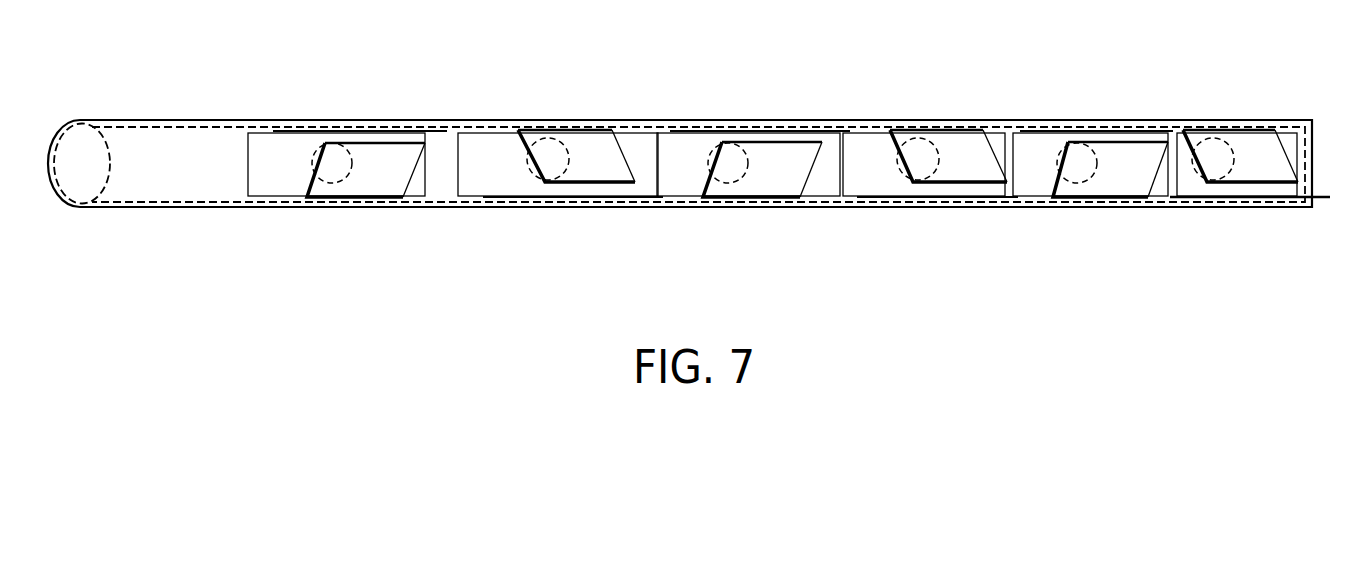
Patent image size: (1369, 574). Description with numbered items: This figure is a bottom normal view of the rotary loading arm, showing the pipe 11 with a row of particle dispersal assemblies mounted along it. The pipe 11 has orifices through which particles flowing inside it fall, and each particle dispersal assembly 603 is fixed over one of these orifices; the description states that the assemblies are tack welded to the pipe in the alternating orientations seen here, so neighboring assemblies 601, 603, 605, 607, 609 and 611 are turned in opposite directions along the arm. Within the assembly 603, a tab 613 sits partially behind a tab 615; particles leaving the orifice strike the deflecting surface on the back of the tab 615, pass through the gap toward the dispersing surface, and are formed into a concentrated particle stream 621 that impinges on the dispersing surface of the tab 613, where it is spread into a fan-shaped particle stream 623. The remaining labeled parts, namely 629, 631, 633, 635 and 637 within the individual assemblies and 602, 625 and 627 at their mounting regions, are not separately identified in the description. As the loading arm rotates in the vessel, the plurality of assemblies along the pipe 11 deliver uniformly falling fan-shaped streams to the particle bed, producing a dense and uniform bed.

The pipe 11 is at (197, 207).
The first unit 601 is at (347, 157).
The particle dispersal assembly 603 is at (560, 158).
The third unit 605 is at (753, 157).
The fourth unit 607 is at (930, 160).
The fifth unit 609 is at (1100, 160).
The sixth unit 611 is at (1265, 155).
The mirror plate 629 is at (373, 173).
The tab 615 is at (585, 160).
The mirror plate 631 is at (768, 172).
The mirror plate 633 is at (963, 168).
The mirror plate 635 is at (1127, 170).
The mirror plate 637 is at (1262, 153).
The support rail 602 is at (438, 132).
The tab 613 is at (643, 197).
The concentrated particle stream 621 is at (835, 132).
The fan-shaped particle stream 623 is at (922, 197).
The support rail 625 is at (1040, 132).
The support rail 627 is at (1322, 199).